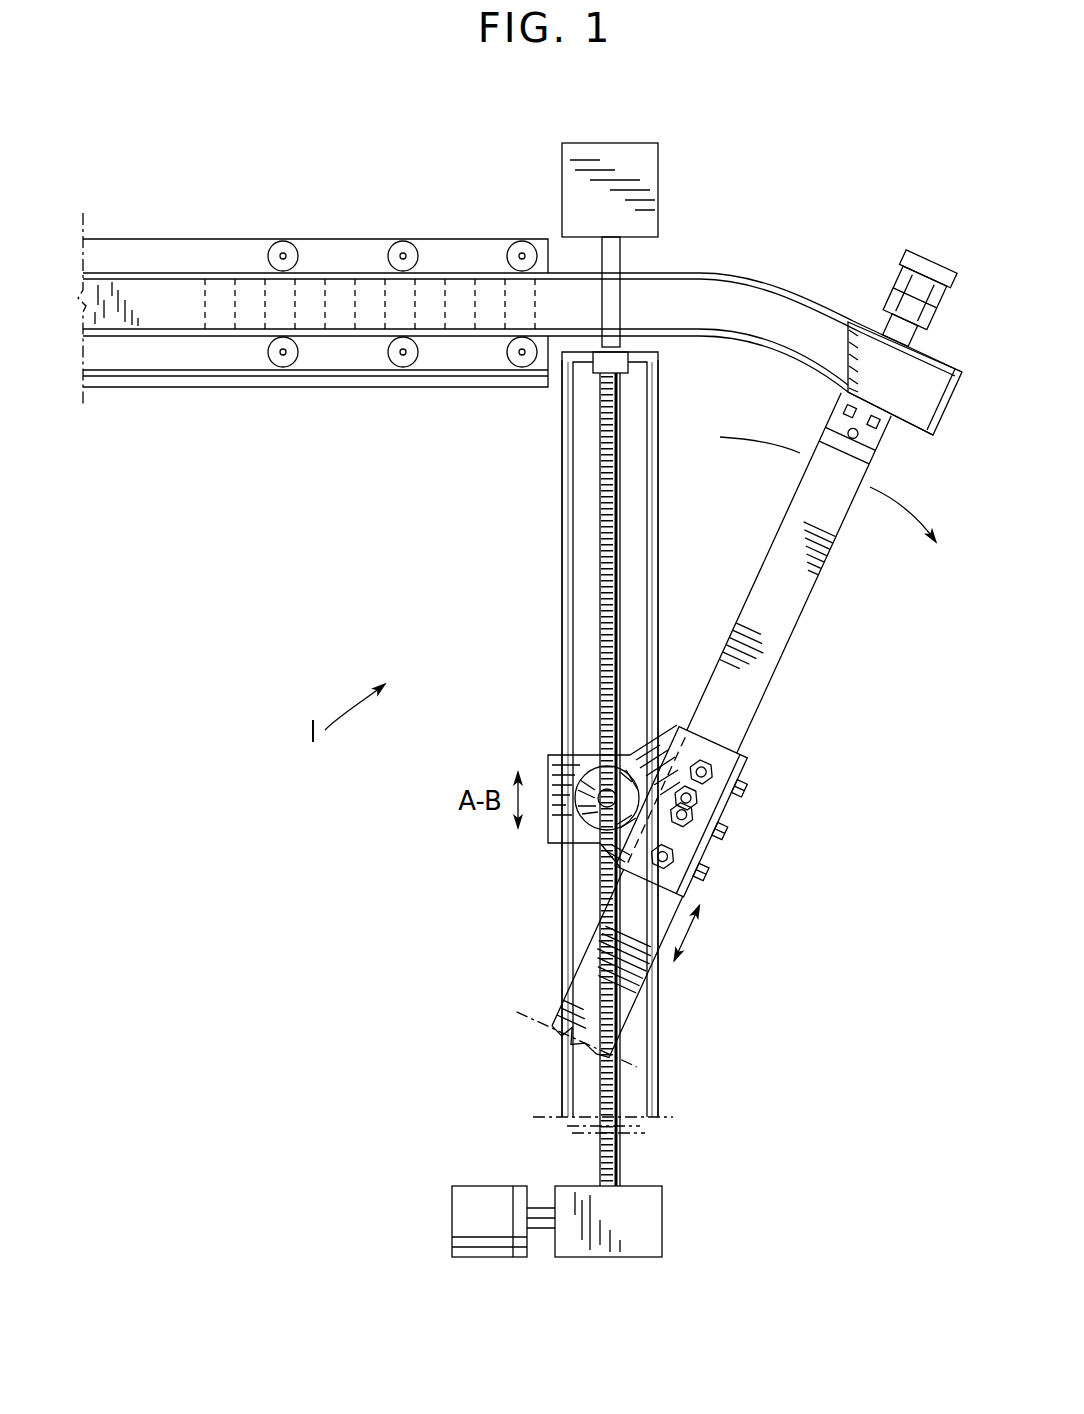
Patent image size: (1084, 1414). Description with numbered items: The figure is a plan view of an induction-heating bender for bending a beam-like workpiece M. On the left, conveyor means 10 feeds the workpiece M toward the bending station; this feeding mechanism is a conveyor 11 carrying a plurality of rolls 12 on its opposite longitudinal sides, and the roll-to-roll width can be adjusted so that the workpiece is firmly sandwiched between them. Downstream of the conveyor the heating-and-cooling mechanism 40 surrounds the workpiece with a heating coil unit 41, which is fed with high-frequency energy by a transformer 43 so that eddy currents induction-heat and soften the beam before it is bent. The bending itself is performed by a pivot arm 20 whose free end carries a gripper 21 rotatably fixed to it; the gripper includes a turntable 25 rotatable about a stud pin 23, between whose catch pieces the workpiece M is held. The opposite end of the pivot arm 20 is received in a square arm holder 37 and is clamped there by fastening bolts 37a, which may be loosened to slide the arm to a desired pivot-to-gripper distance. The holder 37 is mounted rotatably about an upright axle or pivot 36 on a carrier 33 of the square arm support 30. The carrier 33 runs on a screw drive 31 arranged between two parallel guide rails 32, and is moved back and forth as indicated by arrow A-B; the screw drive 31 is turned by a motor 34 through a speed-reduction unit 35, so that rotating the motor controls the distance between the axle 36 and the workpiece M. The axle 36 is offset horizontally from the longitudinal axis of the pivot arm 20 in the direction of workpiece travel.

The conveyor means 10 is at (256, 222).
The conveyor 11 is at (312, 383).
The rolls 12 is at (296, 248).
The workpiece M is at (176, 330).
The pivot arm 20 is at (760, 558).
The gripper 21 is at (866, 262).
The stud pin 23 is at (860, 436).
The turntable 25 is at (892, 310).
The arm support 30 is at (530, 584).
The screw drive 31 is at (605, 518).
The guide rails 32 is at (565, 920).
The carrier 33 is at (570, 765).
The motor 34 is at (468, 1190).
The speed-reduction unit 35 is at (655, 1194).
The upright axle or pivot 36 is at (600, 806).
The square arm holder 37 is at (708, 797).
The fastening bolts 37a is at (750, 788).
The heating-and-cooling mechanism 40 is at (688, 220).
The heating coil unit 41 is at (615, 298).
The transformer 43 is at (632, 148).